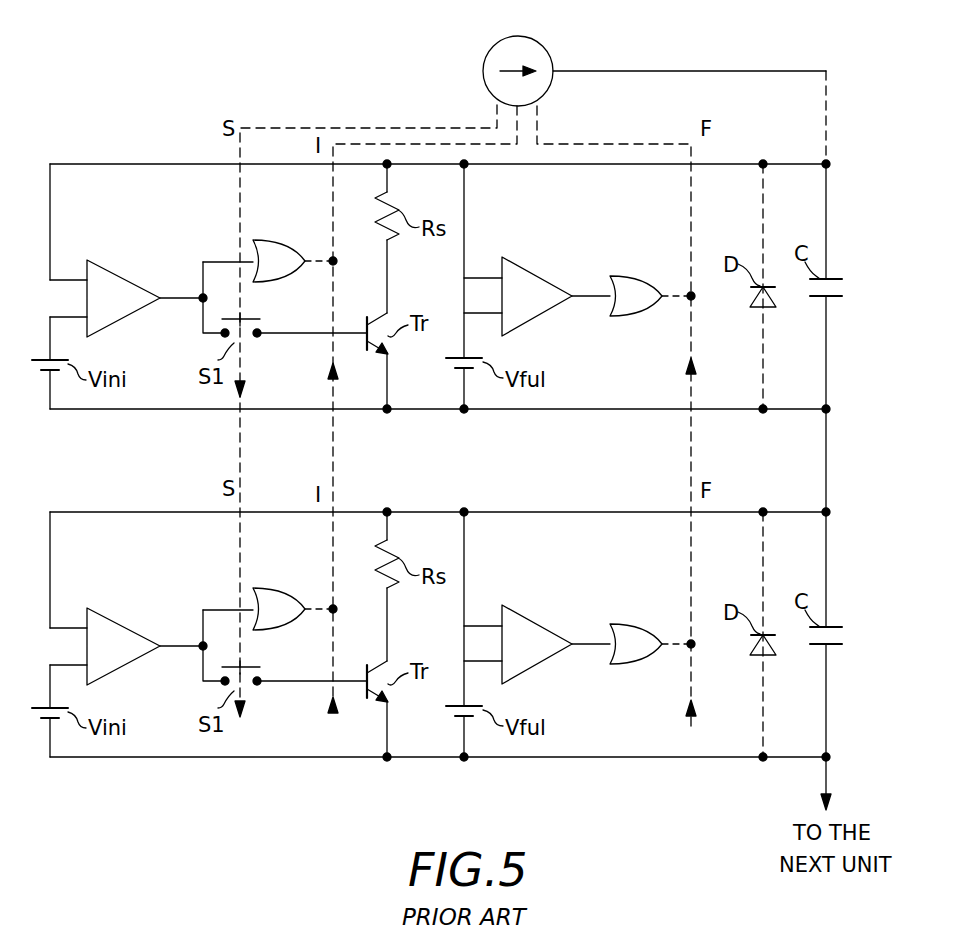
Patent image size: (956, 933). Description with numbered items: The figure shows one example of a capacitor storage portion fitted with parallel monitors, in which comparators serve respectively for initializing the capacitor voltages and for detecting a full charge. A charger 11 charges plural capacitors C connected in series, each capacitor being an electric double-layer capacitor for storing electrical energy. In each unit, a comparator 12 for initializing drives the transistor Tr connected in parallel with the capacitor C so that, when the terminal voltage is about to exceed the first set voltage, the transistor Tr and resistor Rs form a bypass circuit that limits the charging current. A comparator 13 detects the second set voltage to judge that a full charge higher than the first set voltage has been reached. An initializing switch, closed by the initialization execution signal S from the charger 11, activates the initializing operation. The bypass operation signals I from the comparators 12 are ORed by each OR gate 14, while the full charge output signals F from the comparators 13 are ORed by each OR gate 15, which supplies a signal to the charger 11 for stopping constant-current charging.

The charger 11 is at (497, 52).
The comparator for initializing 12 is at (111, 268).
The comparator for detection of a full charge 13 is at (519, 266).
The OR gate 14 is at (270, 245).
The OR gate 15 is at (630, 273).